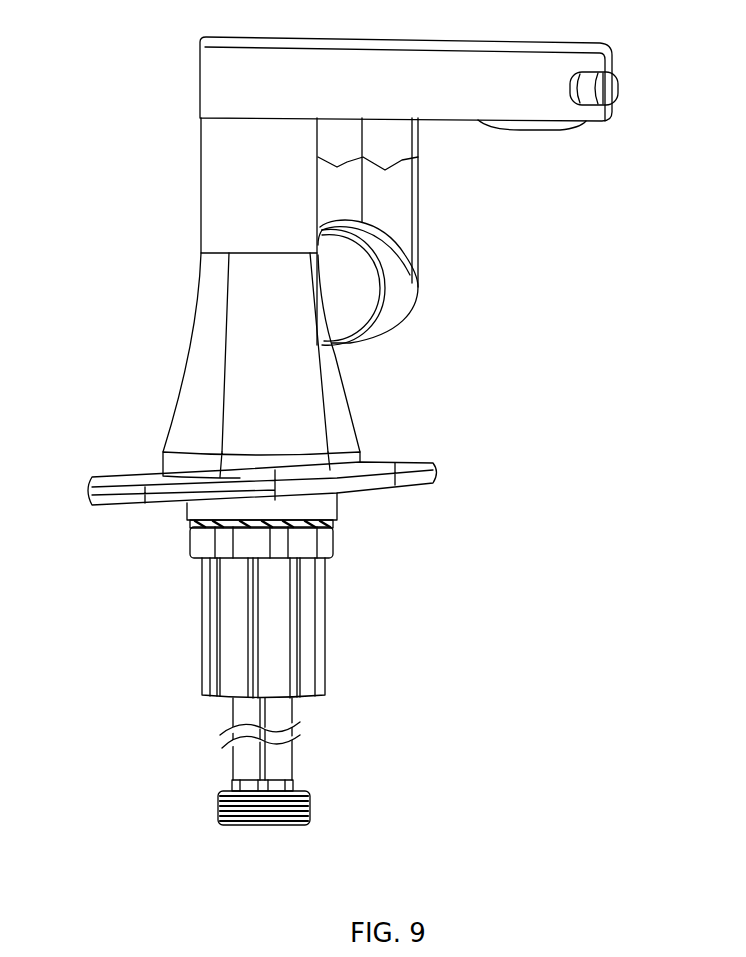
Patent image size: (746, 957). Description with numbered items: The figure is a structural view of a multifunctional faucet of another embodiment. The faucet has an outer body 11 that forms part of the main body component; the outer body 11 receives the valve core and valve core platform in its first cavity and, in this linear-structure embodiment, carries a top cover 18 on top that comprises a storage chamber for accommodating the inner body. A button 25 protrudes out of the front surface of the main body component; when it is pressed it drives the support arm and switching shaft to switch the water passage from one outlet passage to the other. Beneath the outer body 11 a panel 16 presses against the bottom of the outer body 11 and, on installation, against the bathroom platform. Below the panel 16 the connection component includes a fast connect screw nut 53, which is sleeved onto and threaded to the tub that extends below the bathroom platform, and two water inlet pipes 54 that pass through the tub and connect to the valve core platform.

The top cover 18 is at (222, 75).
The button 25 is at (613, 86).
The outer body 11 is at (222, 218).
The panel 16 is at (143, 478).
The fast connect screw nut 53 is at (210, 620).
The water inlet pipe 54 is at (222, 802).